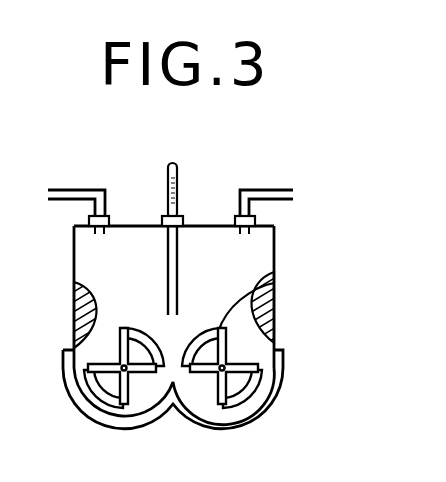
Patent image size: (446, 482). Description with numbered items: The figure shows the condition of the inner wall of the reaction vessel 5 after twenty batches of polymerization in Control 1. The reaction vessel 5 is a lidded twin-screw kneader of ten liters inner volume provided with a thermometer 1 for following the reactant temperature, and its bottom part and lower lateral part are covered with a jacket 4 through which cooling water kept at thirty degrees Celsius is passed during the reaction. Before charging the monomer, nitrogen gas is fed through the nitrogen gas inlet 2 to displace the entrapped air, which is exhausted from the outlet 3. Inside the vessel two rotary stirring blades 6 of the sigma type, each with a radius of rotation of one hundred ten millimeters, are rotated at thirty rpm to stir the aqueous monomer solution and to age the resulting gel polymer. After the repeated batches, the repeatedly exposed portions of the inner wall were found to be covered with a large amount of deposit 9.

The thermometer 1 is at (170, 162).
The nitrogen gas inlet 2 is at (271, 188).
The outlet 3 is at (72, 188).
The jacket 4 is at (270, 411).
The reaction vessel 5 is at (74, 263).
The rotary stirring blades 6 is at (274, 283).
The deposit 9 is at (74, 311).